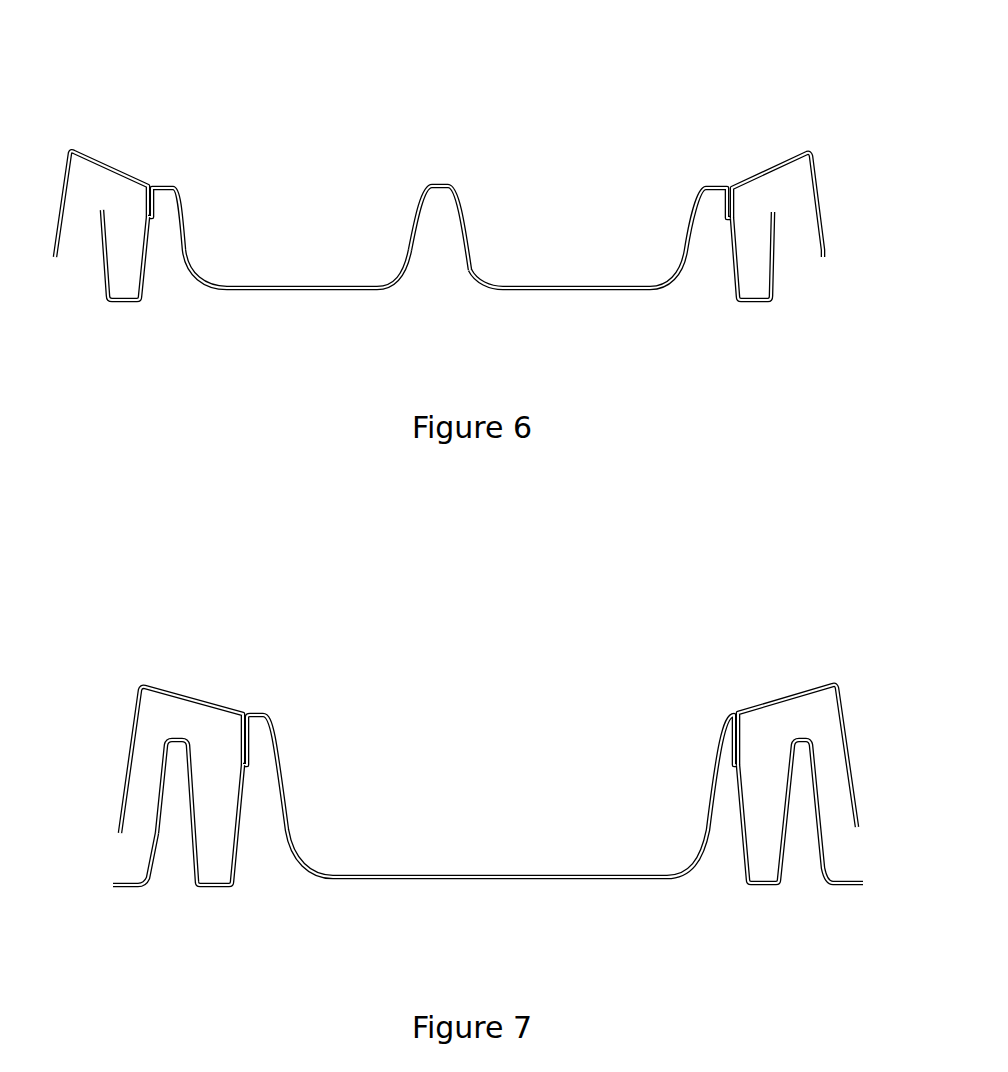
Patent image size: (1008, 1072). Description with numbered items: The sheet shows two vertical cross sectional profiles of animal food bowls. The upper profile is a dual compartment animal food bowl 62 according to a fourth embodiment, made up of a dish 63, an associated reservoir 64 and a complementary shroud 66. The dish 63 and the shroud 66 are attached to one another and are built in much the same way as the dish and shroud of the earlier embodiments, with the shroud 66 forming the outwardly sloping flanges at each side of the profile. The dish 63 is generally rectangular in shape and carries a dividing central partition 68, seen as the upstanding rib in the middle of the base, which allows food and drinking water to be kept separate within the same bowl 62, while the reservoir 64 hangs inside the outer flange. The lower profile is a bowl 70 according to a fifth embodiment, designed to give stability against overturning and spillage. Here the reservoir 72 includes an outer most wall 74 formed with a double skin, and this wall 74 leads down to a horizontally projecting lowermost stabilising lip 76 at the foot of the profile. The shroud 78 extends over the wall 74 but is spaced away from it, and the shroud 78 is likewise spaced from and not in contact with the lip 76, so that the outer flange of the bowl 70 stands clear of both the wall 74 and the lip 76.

In FIG. 6, the dual compartment animal food bowl 62 is at (439, 200).
In FIG. 6, the dish 63 is at (282, 260).
In FIG. 6, the reservoir 64 is at (118, 258).
In FIG. 6, the shroud 66 is at (127, 155).
In FIG. 6, the dividing central partition 68 is at (458, 222).
In FIG. 7, the bowl 70 is at (483, 771).
In FIG. 7, the reservoir 72 is at (218, 833).
In FIG. 7, the outer most wall 74 is at (157, 833).
In FIG. 7, the lowermost stabilising lip 76 is at (135, 885).
In FIG. 7, the shroud 78 is at (157, 682).